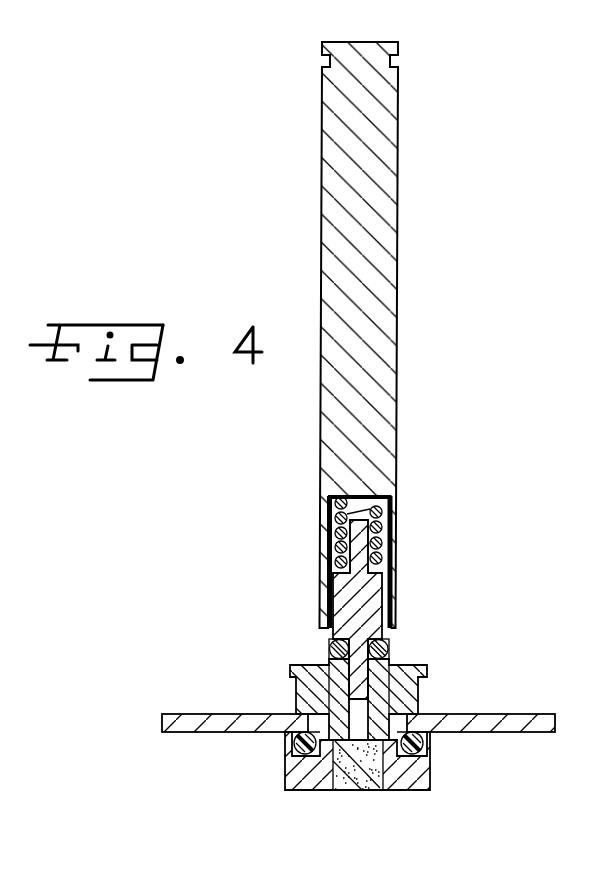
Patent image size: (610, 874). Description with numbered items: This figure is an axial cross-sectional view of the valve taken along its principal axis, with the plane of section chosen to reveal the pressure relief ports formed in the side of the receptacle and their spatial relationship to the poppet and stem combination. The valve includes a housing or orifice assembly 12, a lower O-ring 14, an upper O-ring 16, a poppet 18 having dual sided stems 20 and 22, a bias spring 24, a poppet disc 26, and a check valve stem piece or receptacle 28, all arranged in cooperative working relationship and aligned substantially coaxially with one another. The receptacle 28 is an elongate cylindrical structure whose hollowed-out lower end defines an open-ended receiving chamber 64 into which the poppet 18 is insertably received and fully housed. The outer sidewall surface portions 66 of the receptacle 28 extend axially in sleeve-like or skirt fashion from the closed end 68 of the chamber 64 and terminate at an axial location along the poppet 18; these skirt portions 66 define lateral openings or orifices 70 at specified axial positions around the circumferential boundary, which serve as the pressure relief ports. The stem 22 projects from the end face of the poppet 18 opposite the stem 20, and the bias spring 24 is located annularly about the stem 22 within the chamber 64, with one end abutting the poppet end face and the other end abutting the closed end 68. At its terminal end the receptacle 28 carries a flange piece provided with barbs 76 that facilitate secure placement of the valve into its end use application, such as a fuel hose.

The housing or orifice assembly 12 is at (329, 788).
The lower O-ring 14 is at (292, 750).
The upper O-ring 16 is at (385, 657).
The poppet 18 is at (414, 607).
The stem 20 is at (388, 663).
The stem 22 is at (362, 542).
The bias spring 24 is at (377, 513).
The poppet disc 26 is at (530, 722).
The check valve stem piece or receptacle 28 is at (359, 335).
The receiving chamber 64 is at (363, 504).
The outer sidewall surface portions 66 is at (328, 565).
The closed end 68 is at (352, 498).
The lateral openings or orifices 70 is at (316, 638).
The barbs 76 is at (290, 669).